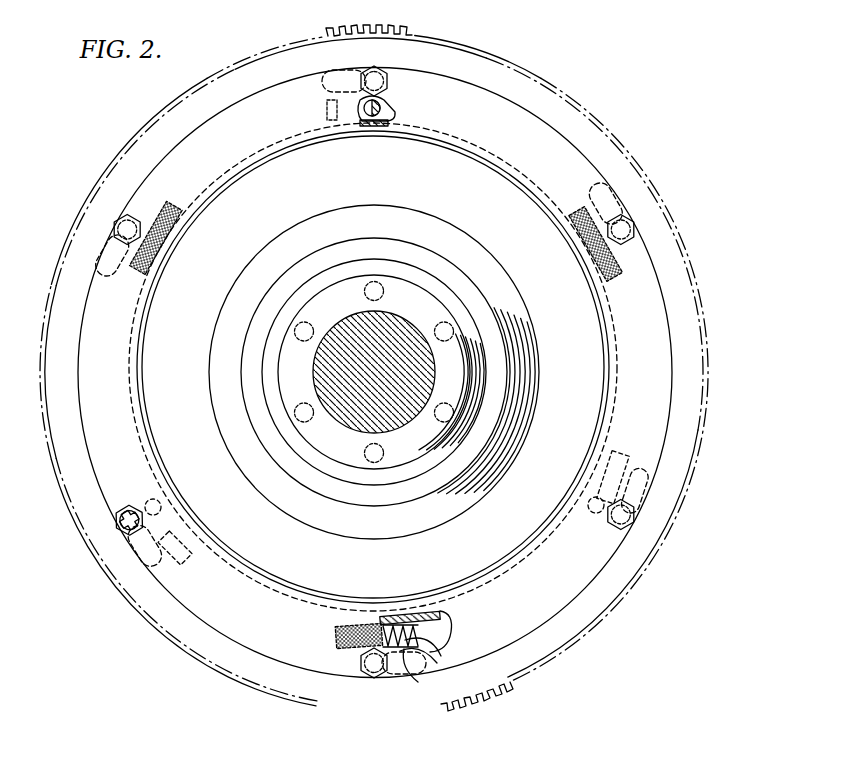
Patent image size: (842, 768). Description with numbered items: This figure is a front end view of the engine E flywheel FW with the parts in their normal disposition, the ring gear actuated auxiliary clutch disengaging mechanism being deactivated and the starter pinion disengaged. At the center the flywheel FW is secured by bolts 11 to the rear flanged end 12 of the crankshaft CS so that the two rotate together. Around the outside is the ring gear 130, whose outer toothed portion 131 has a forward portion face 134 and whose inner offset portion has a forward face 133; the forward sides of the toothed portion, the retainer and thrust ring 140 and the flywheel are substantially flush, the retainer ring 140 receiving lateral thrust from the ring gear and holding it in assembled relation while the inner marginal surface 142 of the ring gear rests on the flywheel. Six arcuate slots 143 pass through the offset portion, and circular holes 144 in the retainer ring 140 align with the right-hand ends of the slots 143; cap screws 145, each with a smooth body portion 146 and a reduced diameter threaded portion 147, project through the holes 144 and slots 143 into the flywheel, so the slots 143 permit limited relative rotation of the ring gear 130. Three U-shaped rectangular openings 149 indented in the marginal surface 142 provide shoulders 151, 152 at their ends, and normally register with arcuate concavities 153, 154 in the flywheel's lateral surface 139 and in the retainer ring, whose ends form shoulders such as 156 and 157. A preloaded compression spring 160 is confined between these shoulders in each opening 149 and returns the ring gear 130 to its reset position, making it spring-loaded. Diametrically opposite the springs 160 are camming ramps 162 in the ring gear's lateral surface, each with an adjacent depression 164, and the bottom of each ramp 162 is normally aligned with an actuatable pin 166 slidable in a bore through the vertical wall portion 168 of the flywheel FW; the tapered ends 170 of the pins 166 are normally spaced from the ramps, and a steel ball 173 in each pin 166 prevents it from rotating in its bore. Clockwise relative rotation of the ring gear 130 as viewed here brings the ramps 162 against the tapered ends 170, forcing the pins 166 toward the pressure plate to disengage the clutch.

The bolts 11 is at (383, 292).
The rear flanged end 12 is at (316, 310).
The crankshaft CS is at (347, 413).
The engine E is at (421, 322).
The ring gear 130 is at (397, 707).
The outer toothed portion 131 is at (462, 713).
The forward face 133 is at (390, 117).
The forward portion face 134 is at (571, 646).
The lateral surface 139 is at (363, 118).
The retainer and thrust ring 140 is at (530, 628).
The inner marginal surface 142 is at (313, 605).
The arcuate slots 143 is at (327, 82).
The circular holes 144 is at (372, 65).
The cap screws 145 is at (362, 82).
The smooth body portion 146 is at (124, 505).
The reduced diameter threaded portion 147 is at (383, 67).
The rectangular openings 149 is at (412, 616).
The leg or shoulder 151 is at (338, 647).
The leg or shoulder 152 is at (449, 626).
The arcuate concavity 153 is at (418, 664).
The arcuate concavity 154 is at (337, 637).
The shoulder 156 is at (431, 644).
The shoulder 157 is at (345, 615).
The compression spring 160 is at (128, 276).
The camming ramps 162 is at (342, 120).
The depression 164 is at (327, 108).
The actuatable pins 166 is at (380, 100).
The vertical wall portion 168 is at (575, 326).
The tapered ends 170 is at (350, 109).
The steel ball 173 is at (380, 97).
The flywheel FW is at (428, 613).